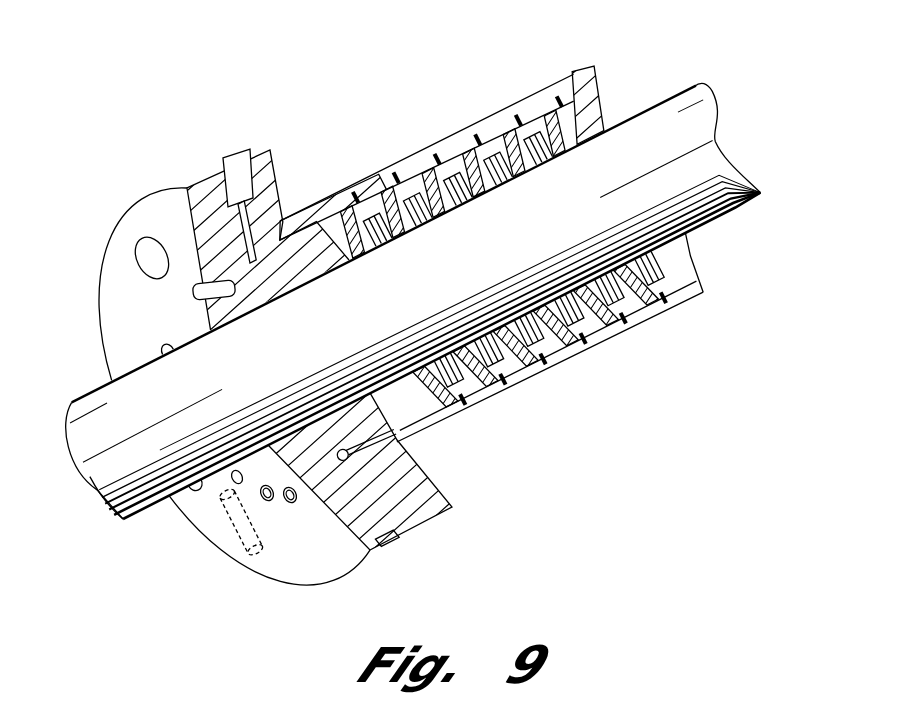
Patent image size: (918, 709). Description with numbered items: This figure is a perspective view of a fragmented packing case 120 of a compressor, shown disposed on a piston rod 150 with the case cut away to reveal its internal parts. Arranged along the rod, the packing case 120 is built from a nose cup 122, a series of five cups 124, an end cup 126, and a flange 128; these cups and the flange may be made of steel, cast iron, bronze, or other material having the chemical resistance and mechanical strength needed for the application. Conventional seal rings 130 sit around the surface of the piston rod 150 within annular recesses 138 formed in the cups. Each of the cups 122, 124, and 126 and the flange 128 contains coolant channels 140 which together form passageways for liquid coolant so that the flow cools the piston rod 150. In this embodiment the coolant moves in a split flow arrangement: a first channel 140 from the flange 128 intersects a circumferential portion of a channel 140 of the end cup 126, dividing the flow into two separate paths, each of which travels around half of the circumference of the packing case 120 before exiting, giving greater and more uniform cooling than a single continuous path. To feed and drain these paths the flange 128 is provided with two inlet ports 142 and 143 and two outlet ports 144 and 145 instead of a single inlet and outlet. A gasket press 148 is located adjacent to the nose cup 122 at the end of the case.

The packing case 120 is at (150, 81).
The nose cup 122 is at (549, 95).
The cups 124 is at (480, 133).
The end cup 126 is at (306, 210).
The flange 128 is at (147, 197).
The seal rings 130 is at (460, 367).
The annular recesses 138 is at (600, 135).
The coolant channels 140 is at (275, 190).
The inlet port 142 is at (242, 172).
The inlet port 143 is at (190, 295).
The outlet port 144 is at (235, 547).
The outlet port 145 is at (388, 543).
The gasket press 148 is at (690, 259).
The piston rod 150 is at (717, 118).